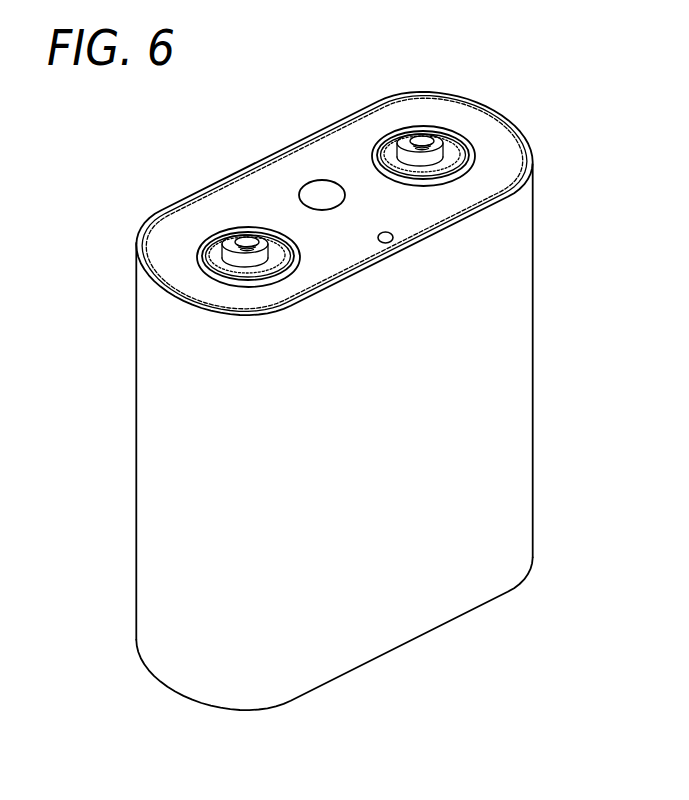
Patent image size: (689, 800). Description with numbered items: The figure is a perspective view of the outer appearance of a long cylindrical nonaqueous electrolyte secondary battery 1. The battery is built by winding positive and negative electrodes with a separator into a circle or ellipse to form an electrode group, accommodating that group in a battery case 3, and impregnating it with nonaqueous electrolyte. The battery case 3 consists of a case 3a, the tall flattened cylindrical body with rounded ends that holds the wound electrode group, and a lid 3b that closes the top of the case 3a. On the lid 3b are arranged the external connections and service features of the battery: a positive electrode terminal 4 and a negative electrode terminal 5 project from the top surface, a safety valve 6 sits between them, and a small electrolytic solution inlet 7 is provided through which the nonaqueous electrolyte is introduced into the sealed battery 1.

The nonaqueous electrolyte secondary battery 1 is at (404, 414).
The battery case 3 is at (136, 230).
The case of the battery case 3a is at (142, 397).
The lid of the battery case 3b is at (291, 169).
The positive electrode terminal 4 is at (245, 227).
The negative electrode terminal 5 is at (452, 131).
The safety valve 6 is at (318, 189).
The electrolytic solution inlet 7 is at (390, 234).